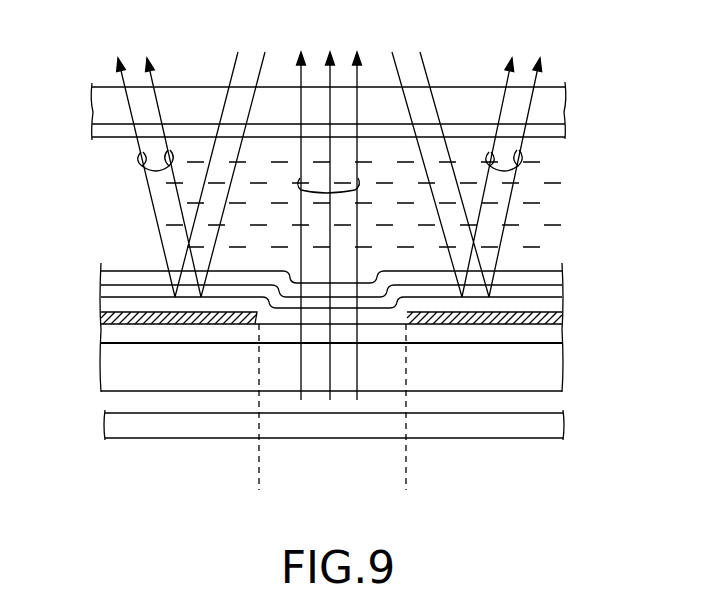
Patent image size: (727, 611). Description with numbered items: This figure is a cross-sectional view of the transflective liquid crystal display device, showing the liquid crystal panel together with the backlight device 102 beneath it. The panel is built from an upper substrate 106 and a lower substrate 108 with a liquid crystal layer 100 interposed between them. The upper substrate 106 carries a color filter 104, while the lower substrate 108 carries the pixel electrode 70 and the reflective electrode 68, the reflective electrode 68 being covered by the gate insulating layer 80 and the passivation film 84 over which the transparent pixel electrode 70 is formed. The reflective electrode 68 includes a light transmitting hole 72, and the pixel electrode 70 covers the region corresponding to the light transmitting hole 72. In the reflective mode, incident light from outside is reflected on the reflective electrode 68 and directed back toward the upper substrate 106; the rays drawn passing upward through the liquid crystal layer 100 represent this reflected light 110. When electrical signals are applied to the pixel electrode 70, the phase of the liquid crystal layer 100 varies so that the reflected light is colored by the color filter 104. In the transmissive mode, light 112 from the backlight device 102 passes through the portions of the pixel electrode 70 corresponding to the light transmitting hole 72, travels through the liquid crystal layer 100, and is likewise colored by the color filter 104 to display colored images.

The reflective electrode 68 is at (100, 317).
The pixel electrode 70 is at (130, 278).
The light transmitting hole 72 is at (259, 485).
The gate insulating layer 80 is at (105, 300).
The passivation film 84 is at (105, 285).
The liquid crystal layer 100 is at (583, 142).
The backlight device 102 is at (480, 430).
The color filter 104 is at (385, 127).
The upper substrate 106 is at (583, 78).
The lower substrate 108 is at (583, 273).
The reflected ambient light 110 is at (136, 162).
The light from the backlight device 112 is at (360, 186).